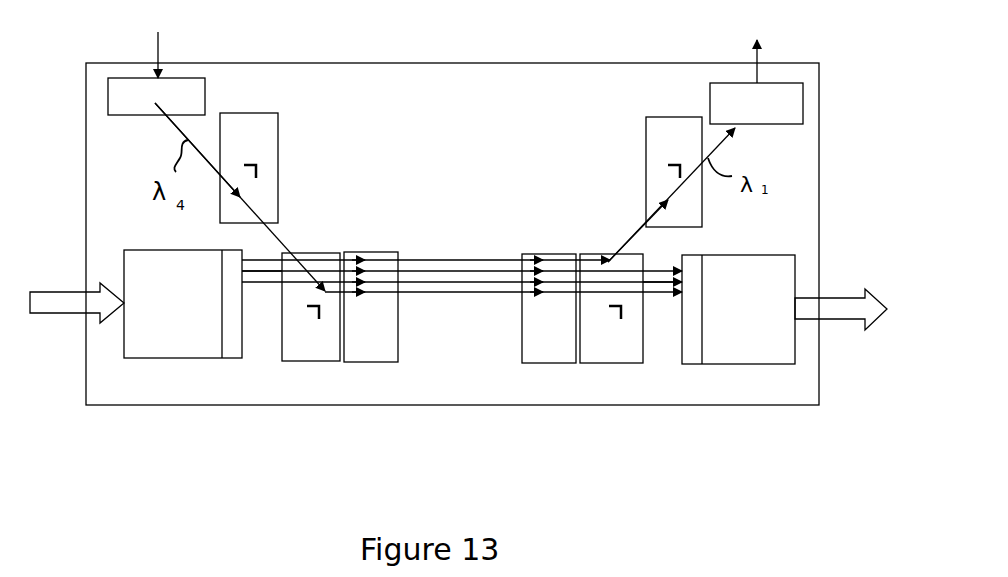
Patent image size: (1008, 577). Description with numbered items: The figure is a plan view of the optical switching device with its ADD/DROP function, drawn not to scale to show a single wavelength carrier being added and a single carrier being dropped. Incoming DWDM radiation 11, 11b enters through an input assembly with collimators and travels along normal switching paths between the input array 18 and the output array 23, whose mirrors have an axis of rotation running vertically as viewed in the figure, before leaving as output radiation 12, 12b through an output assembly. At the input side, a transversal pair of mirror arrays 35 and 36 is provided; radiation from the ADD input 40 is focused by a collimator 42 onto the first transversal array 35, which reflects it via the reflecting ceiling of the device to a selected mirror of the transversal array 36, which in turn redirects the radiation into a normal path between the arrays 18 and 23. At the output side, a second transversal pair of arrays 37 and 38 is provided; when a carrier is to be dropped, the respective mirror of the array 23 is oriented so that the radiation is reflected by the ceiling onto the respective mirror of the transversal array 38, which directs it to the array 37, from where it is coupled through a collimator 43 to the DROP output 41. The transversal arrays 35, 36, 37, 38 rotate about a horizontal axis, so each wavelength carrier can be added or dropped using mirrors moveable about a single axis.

The DWDM radiation 11 is at (55, 305).
The DWDM radiation 11b is at (266, 312).
The DWDM radiation 12 is at (838, 307).
The DWDM radiation 12b is at (661, 312).
The input array 18 is at (363, 350).
The output array 23 is at (547, 353).
The first transversal array 35 is at (275, 145).
The transversal array 36 is at (305, 358).
The transversal array 37 is at (653, 167).
The transversal array 38 is at (597, 355).
The ADD input 40 is at (152, 54).
The DROP output 41 is at (760, 58).
The collimator 42 is at (108, 105).
The collimator 43 is at (790, 88).